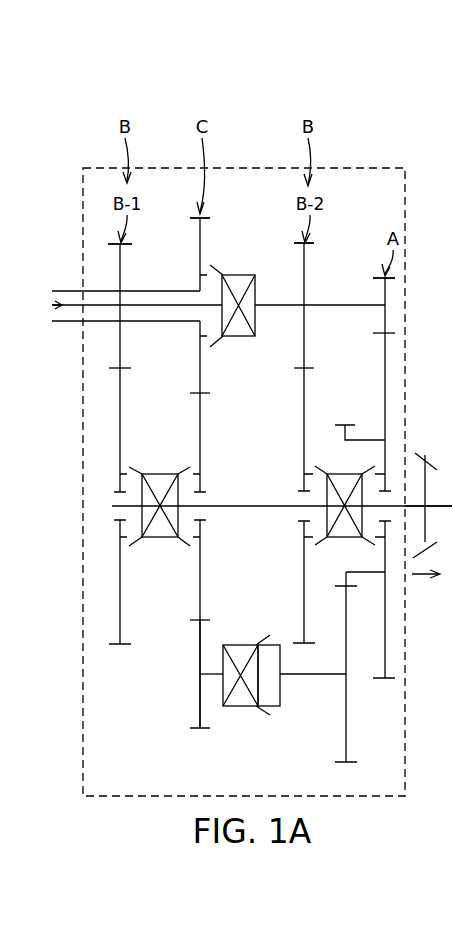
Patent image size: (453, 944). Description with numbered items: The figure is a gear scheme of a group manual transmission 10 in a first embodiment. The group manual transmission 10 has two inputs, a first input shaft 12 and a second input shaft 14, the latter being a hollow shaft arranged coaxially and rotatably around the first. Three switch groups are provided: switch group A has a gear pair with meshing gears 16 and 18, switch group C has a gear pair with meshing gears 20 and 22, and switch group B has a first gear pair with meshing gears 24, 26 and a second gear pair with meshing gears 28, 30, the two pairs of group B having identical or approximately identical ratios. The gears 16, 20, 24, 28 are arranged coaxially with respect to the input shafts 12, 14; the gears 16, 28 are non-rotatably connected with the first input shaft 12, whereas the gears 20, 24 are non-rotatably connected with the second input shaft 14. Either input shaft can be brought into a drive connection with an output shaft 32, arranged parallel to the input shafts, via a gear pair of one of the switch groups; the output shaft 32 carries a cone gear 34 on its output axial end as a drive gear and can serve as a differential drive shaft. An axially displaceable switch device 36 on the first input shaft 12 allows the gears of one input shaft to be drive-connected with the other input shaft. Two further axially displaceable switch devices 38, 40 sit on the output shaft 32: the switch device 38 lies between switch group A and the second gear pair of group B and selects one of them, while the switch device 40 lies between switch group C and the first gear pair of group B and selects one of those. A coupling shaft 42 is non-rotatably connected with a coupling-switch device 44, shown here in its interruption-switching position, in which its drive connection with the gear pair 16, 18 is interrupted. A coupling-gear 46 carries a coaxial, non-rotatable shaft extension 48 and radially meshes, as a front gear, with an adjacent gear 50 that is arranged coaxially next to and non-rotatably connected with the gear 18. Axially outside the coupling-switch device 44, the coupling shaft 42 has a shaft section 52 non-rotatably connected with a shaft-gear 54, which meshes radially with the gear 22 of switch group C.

The group manual transmission 10 is at (262, 96).
The first input shaft 12 is at (70, 308).
The second input shaft 14 is at (93, 291).
The gear 16 is at (385, 292).
The gear 18 is at (385, 352).
The gear 20 is at (200, 238).
The gear 22 is at (200, 415).
The gear 24 is at (120, 266).
The gear 26 is at (120, 398).
The gear 28 is at (304, 268).
The gear 30 is at (304, 393).
The output shaft 32 is at (402, 508).
The cone gear 34 is at (417, 455).
The switch device 36 is at (245, 336).
The switch device 38 is at (338, 474).
The switch device 40 is at (152, 537).
The coupling shaft 42 is at (210, 683).
The coupling-switch device 44 is at (245, 706).
The coupling-gear 46 is at (346, 735).
The shaft extension 48 is at (302, 675).
The adjacent gear 50 is at (346, 583).
The shaft section 52 is at (201, 663).
The shaft-gear 54 is at (198, 641).